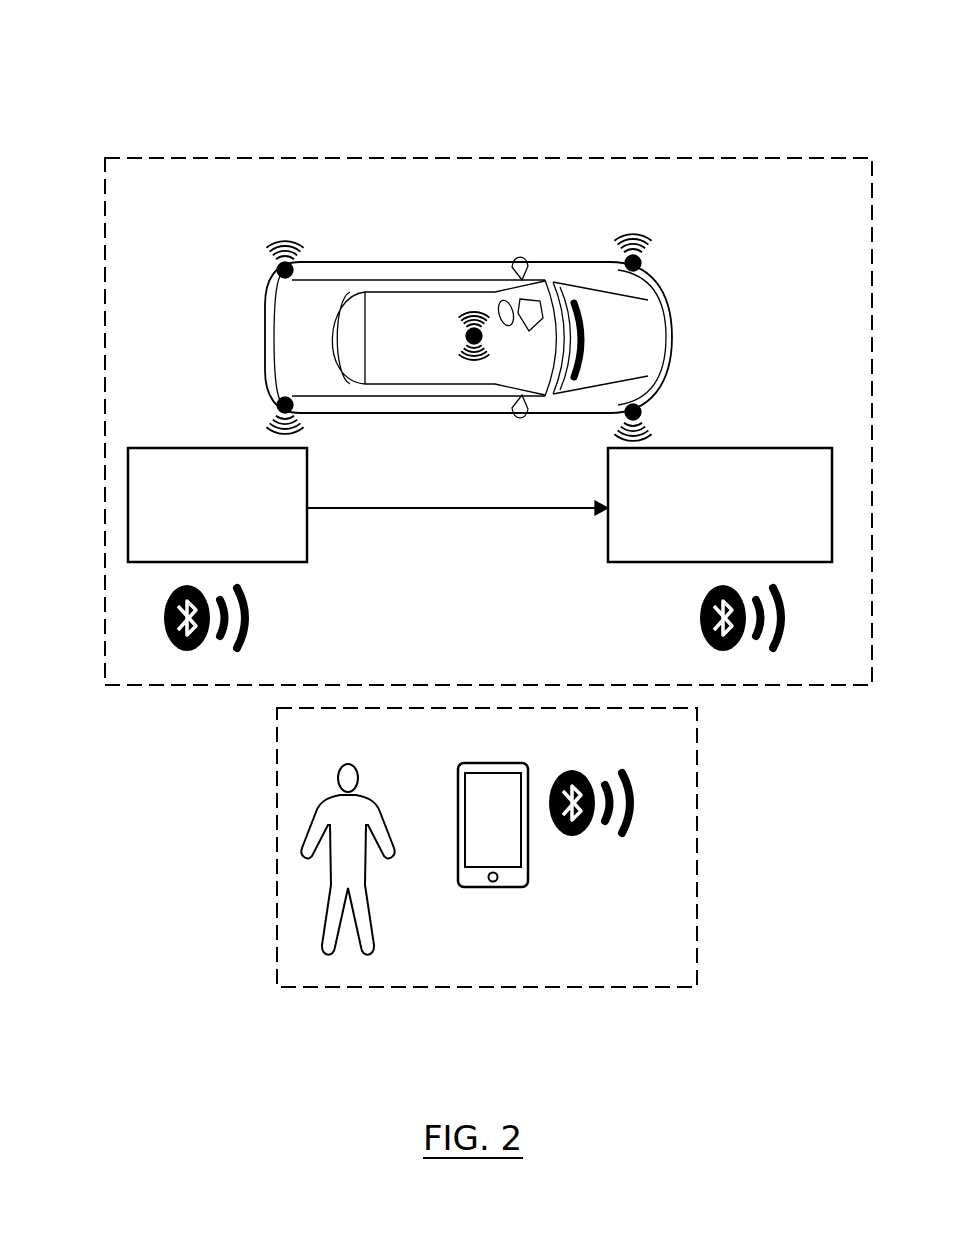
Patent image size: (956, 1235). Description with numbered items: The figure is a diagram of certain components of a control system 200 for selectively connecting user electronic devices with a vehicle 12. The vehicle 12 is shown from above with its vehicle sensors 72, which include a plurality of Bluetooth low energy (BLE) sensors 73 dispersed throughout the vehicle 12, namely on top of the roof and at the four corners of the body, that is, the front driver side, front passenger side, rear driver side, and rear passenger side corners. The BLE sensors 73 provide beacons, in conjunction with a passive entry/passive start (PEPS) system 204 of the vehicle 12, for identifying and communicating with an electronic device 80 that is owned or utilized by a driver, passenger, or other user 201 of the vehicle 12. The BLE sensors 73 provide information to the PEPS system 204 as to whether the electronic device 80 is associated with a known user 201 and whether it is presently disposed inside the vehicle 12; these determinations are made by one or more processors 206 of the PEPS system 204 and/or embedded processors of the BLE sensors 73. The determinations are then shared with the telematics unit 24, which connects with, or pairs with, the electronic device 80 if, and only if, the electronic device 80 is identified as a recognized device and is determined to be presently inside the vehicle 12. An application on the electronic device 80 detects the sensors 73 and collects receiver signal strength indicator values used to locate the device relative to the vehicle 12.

The control system 200 is at (166, 110).
The vehicle 12 is at (669, 283).
The BLE sensors 73 is at (280, 271).
The vehicle sensors 72 is at (467, 340).
The passive entry/passive start (PEPS) system 204 is at (153, 495).
The processors 206 is at (152, 563).
The telematics unit 24 is at (795, 460).
The electronic device 80 is at (683, 870).
The user 201 is at (327, 953).